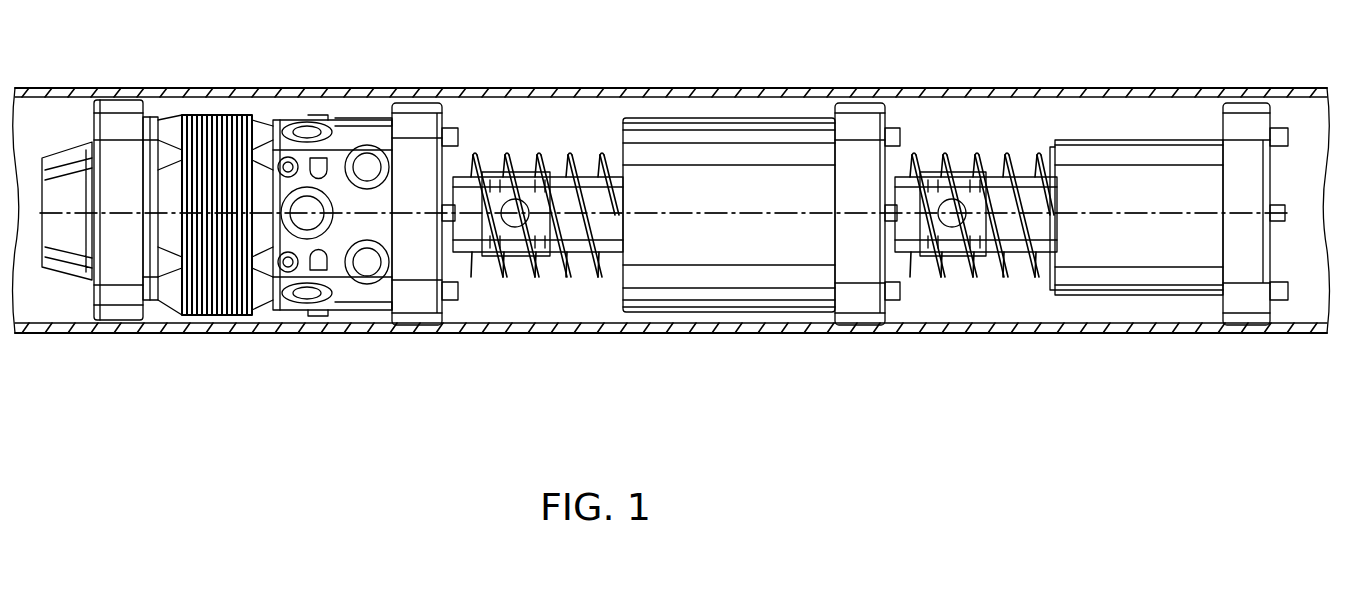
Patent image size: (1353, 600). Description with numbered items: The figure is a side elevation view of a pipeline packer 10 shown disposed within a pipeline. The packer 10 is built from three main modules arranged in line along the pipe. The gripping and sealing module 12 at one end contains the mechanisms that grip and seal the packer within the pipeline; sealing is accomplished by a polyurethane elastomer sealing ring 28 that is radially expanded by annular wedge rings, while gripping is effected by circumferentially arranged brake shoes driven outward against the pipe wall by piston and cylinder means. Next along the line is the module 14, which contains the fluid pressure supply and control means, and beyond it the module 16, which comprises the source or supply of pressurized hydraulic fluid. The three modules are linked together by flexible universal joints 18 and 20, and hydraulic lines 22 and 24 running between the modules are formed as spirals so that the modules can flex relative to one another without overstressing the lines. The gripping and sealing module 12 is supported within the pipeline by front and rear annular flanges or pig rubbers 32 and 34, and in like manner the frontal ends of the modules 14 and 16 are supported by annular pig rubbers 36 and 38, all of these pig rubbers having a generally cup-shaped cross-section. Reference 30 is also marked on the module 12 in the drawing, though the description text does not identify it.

The pipeline packer 10 is at (886, 56).
The gripping and sealing module 12 is at (282, 108).
The fluid pressure supply and control module 14 is at (706, 110).
The pressurized hydraulic fluid supply module 16 is at (1128, 130).
The flexible universal joint 18 is at (578, 258).
The flexible universal joint 20 is at (1013, 258).
The hydraulic line 22 is at (508, 155).
The hydraulic line 24 is at (947, 155).
The sealing ring 28 is at (203, 115).
The ports 30 is at (304, 130).
The front annular flange or pig rubber 32 is at (413, 308).
The rear annular flange or pig rubber 34 is at (118, 308).
The annular pig rubber 36 is at (855, 300).
The annular pig rubber 38 is at (1233, 305).